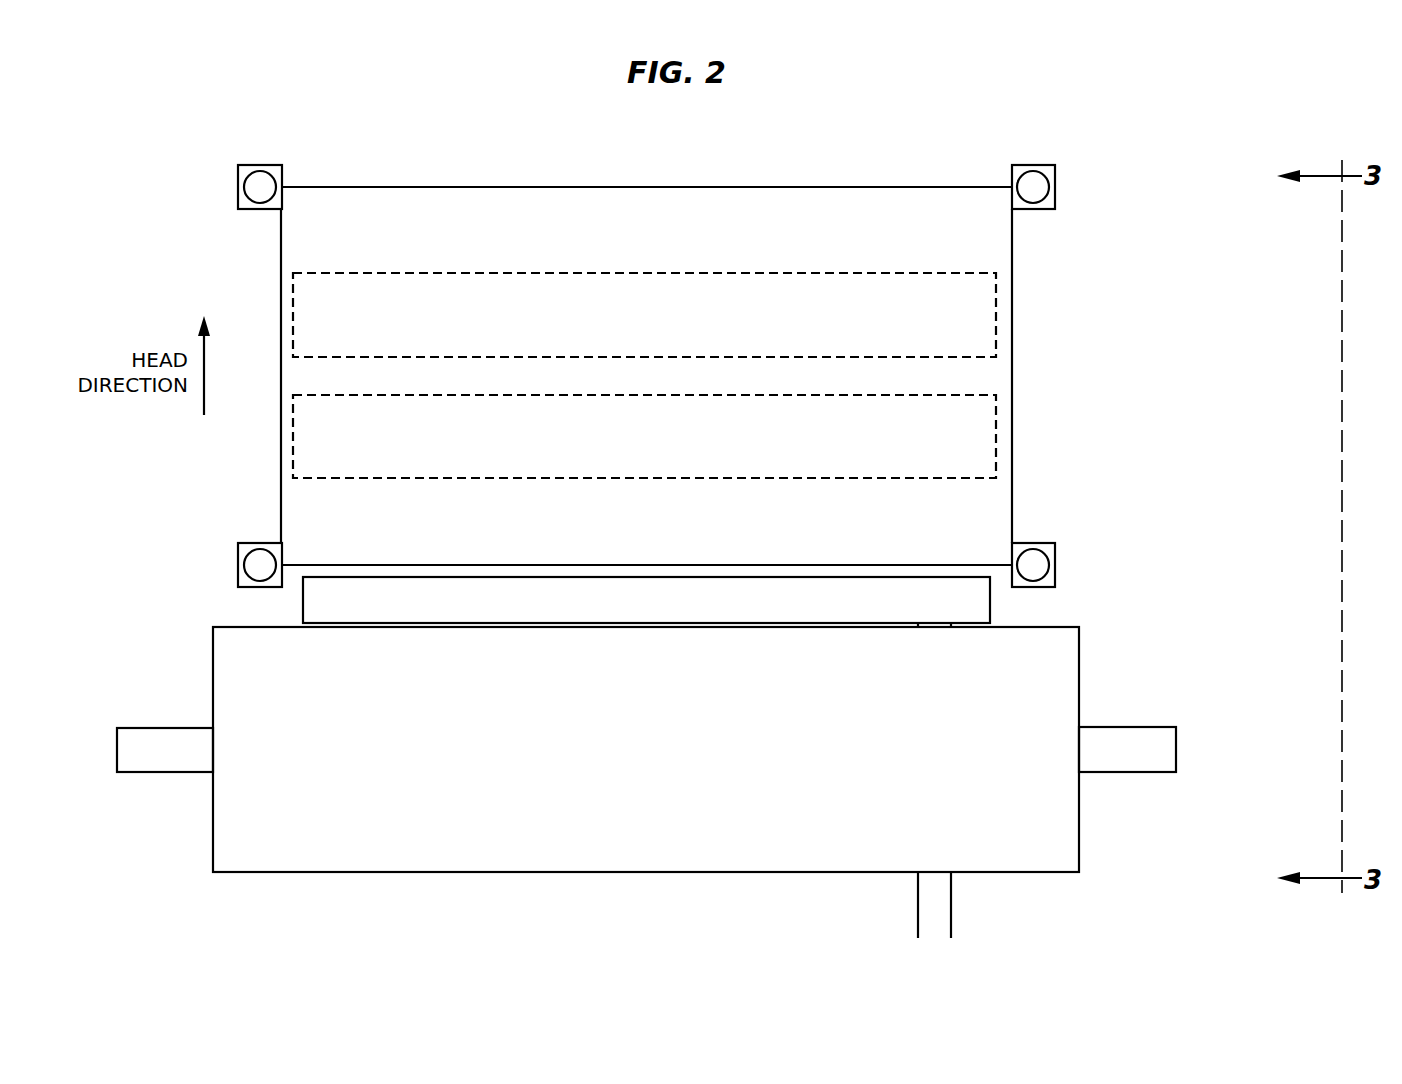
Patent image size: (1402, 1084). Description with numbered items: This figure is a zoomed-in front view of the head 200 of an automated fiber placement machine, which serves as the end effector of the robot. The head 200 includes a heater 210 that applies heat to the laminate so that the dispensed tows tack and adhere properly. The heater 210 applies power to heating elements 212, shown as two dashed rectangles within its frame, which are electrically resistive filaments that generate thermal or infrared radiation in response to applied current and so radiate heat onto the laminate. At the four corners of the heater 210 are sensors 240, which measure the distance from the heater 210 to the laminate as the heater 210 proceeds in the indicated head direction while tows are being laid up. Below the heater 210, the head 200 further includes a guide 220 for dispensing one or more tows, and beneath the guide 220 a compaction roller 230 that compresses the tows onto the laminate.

The head 200 is at (1182, 877).
The heater 210 is at (1075, 168).
The heating elements 212 is at (838, 273).
The guide 220 is at (303, 600).
The compaction roller 230 is at (1079, 653).
The sensors 240 is at (256, 165).